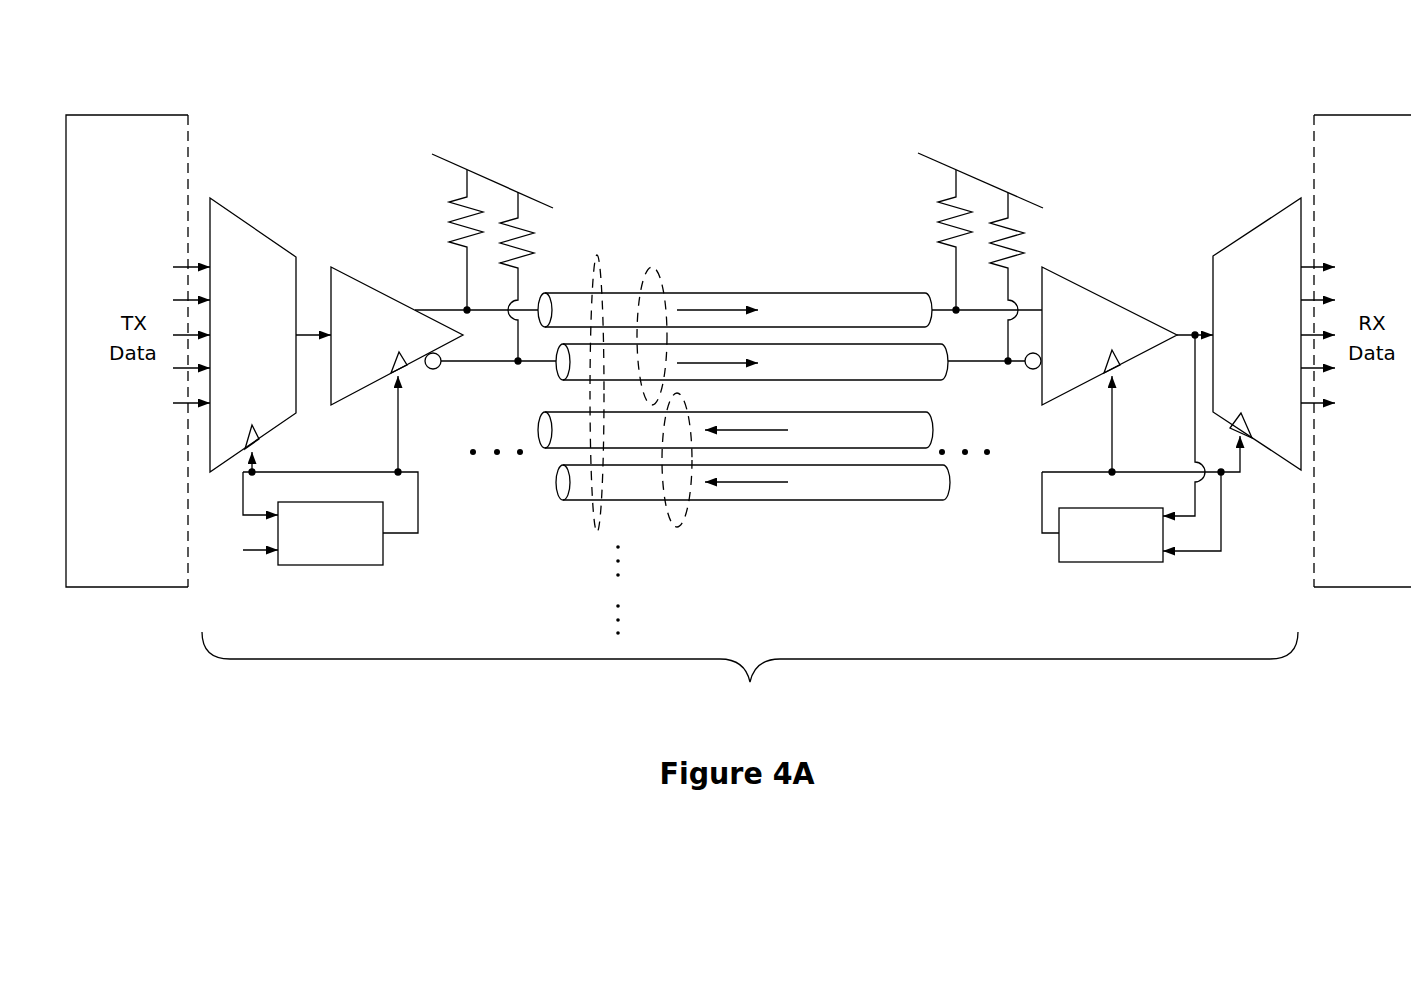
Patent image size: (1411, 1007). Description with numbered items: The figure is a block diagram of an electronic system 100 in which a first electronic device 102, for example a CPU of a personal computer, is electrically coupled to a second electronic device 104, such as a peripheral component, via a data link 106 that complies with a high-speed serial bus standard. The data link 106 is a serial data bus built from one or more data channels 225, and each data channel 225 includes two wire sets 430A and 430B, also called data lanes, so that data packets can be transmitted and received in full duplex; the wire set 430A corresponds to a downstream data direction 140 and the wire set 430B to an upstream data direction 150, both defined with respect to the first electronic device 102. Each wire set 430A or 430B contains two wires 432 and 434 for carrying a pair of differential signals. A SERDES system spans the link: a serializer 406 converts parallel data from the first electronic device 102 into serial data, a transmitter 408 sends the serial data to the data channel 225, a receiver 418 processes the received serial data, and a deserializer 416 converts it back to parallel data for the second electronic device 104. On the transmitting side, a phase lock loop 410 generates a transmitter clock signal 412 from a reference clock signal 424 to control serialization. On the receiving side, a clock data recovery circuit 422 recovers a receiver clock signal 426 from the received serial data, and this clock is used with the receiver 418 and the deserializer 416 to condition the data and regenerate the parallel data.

The electronic system 100 is at (1117, 67).
The first electronic device 102 is at (147, 146).
The second electronic device 104 is at (1389, 146).
The data link 106 is at (750, 687).
The downstream data direction 140 is at (700, 308).
The upstream data direction 150 is at (753, 486).
The data channel 225 is at (597, 258).
The serializer 406 is at (233, 213).
The transmitter 408 is at (362, 281).
The phase lock loop 410 is at (343, 567).
The transmitter clock signal 412 is at (418, 488).
The deserializer 416 is at (1276, 215).
The receiver 418 is at (1085, 287).
The clock data recovery circuit 422 is at (1110, 563).
The reference clock signal 424 is at (247, 552).
The receiver clock signal 426 is at (1104, 470).
The first wire set 430A is at (652, 270).
The second wire set 430B is at (675, 527).
The first wire 432 is at (800, 322).
The second wire 434 is at (848, 374).